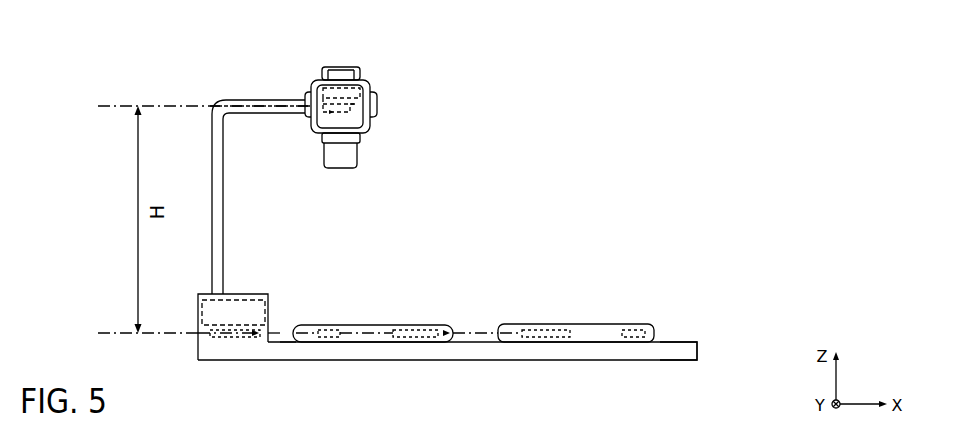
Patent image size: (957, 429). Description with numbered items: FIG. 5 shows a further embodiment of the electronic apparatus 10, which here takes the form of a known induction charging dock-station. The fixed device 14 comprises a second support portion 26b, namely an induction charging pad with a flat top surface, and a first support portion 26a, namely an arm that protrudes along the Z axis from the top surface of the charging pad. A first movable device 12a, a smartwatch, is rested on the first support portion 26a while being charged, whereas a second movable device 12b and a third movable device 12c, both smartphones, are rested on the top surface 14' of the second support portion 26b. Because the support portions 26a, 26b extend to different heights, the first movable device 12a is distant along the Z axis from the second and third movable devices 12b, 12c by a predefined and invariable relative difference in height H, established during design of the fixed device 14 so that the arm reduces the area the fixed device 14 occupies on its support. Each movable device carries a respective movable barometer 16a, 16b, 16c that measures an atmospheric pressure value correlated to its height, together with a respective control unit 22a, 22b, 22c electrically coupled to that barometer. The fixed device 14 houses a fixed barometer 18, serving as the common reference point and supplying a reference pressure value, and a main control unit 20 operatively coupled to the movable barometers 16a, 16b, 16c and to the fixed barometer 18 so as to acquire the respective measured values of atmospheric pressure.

The electronic apparatus 10 is at (740, 168).
The first movable device 12a is at (368, 126).
The second movable device 12b is at (368, 344).
The third movable device 12c is at (595, 343).
The fixed device 14 is at (447, 327).
The top surface 14' is at (287, 310).
The first movable barometer 16a is at (334, 119).
The second movable barometer 16b is at (331, 324).
The third movable barometer 16c is at (536, 328).
The fixed barometer 18 is at (228, 339).
The main control unit 20 is at (245, 307).
The control unit 22a is at (381, 95).
The control unit 22b is at (428, 324).
The control unit 22c is at (632, 325).
The first support portion 26a is at (277, 91).
The second support portion 26b is at (681, 334).